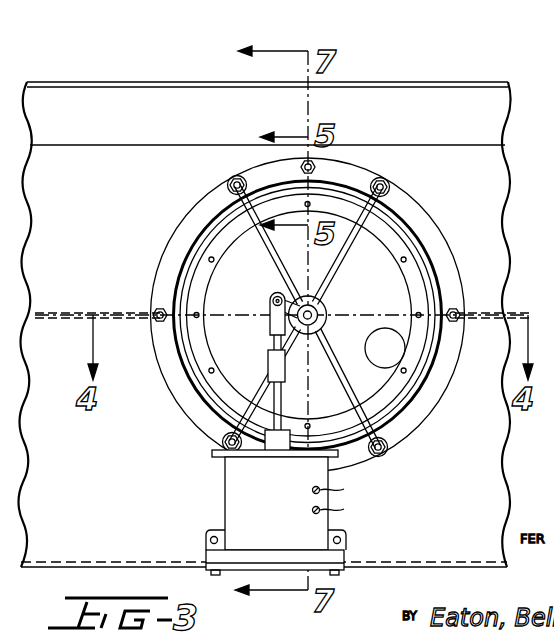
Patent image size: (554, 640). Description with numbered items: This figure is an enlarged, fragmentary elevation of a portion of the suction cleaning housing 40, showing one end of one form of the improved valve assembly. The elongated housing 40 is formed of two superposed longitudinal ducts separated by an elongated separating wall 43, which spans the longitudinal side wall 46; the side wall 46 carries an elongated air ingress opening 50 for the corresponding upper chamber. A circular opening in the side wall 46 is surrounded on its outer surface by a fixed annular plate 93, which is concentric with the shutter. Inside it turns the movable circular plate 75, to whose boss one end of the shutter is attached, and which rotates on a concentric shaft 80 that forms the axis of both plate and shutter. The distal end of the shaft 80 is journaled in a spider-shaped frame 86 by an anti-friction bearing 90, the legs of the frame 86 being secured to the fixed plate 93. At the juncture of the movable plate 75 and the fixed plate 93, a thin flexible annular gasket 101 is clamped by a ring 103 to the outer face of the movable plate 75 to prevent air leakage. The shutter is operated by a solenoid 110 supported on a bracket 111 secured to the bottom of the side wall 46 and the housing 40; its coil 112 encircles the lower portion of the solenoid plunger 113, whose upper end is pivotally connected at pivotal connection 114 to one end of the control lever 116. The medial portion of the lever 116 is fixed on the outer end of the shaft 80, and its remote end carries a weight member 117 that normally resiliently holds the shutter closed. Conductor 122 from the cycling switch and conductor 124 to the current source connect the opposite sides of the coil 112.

The elongated housing 40 is at (422, 572).
The separating wall 43 is at (88, 292).
The side wall 46 is at (444, 513).
The air ingress opening 50 is at (157, 150).
The movable circular plate 75 is at (377, 281).
The shaft 80 is at (325, 312).
The frame 86 is at (277, 268).
The anti-friction bearing 90 is at (306, 292).
The fixed plate 93 is at (413, 200).
The gasket 101 is at (397, 233).
The ring 103 is at (395, 247).
The solenoid 110 is at (220, 495).
The bracket 111 is at (346, 556).
The coil 112 is at (285, 501).
The solenoid plunger 113 is at (283, 398).
The pivotal connection 114 is at (270, 300).
The control lever 116 is at (362, 336).
The weight member 117 is at (392, 366).
The conductor 122 is at (344, 509).
The conductor 124 is at (344, 489).